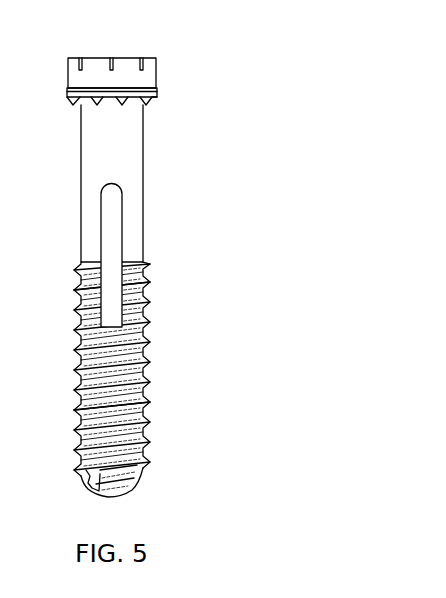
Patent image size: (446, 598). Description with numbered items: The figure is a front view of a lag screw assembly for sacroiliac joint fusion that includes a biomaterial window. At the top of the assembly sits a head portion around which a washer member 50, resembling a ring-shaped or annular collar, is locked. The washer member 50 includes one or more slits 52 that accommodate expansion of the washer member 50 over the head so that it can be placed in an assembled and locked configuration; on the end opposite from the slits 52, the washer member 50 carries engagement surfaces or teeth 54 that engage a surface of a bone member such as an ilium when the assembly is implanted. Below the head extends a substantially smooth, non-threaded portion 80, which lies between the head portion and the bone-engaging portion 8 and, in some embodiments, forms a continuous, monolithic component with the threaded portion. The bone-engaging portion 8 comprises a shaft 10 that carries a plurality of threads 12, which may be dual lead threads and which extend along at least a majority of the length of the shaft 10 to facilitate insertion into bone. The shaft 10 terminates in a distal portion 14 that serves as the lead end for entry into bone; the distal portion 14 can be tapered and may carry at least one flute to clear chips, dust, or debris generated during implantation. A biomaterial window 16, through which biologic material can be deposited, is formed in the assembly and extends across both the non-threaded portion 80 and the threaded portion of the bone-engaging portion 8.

The bone-engaging portion 8 is at (147, 303).
The shaft 10 is at (148, 343).
The threads 12 is at (147, 406).
The distal portion 14 is at (140, 480).
The biomaterial window 16 is at (118, 250).
The washer member 50 is at (157, 72).
The slits 52 is at (80, 58).
The teeth 54 is at (66, 99).
The non-threaded portion 80 is at (145, 152).